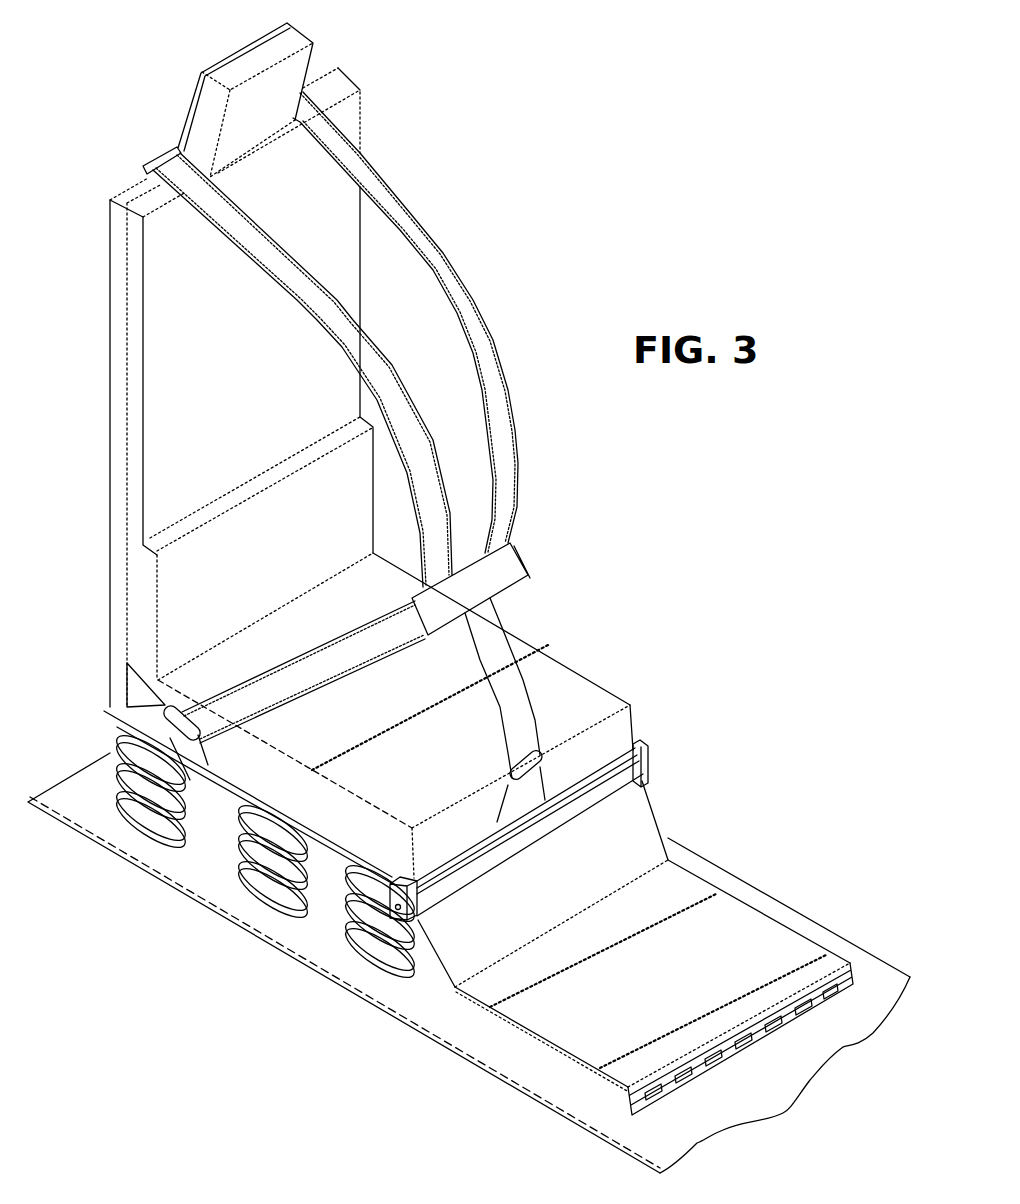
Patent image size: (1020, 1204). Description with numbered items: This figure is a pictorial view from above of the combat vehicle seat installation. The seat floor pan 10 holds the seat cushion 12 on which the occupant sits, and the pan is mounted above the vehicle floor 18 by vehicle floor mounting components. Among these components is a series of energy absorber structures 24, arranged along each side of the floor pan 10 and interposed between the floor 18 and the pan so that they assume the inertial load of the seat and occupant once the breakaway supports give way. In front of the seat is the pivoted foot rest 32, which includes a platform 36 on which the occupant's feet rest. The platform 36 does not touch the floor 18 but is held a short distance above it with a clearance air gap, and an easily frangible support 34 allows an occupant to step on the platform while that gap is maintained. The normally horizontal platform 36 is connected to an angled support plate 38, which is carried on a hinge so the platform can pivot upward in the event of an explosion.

The seat floor pan 10 is at (106, 713).
The seat cushion 12 is at (534, 636).
The vehicle floor 18 is at (830, 1045).
The energy absorber structures 24 is at (142, 840).
The foot rest 32 is at (457, 1010).
The frangible support 34 is at (848, 990).
The platform 36 is at (681, 888).
The angled support plate 38 is at (645, 808).